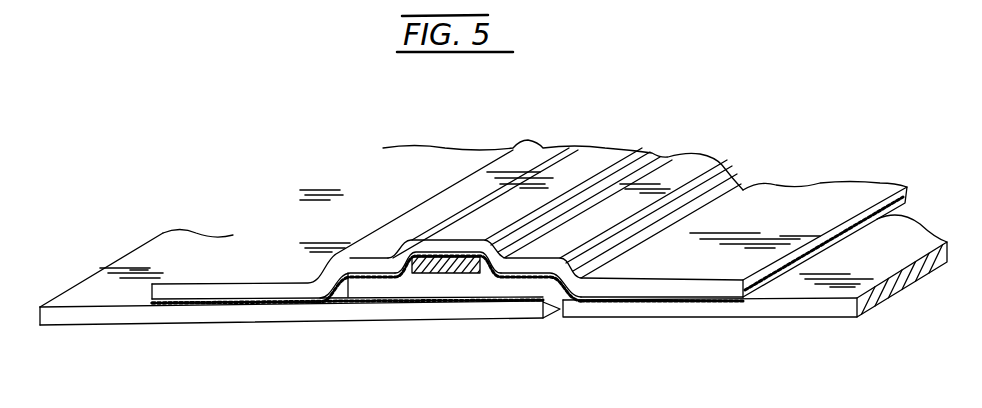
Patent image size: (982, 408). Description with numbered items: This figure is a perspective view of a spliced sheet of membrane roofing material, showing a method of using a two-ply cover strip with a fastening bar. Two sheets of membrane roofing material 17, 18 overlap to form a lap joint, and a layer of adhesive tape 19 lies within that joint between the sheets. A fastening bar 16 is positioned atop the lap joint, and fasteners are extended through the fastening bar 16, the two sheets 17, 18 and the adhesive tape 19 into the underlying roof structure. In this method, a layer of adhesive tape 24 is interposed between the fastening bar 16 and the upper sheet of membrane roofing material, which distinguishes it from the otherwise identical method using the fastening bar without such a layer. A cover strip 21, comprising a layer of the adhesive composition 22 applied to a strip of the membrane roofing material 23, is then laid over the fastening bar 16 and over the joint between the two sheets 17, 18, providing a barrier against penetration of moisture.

The fastening bar 16 is at (443, 254).
The sheet of membrane roofing material 17 is at (253, 323).
The sheet of membrane roofing material 18 is at (623, 318).
The adhesive tape 19 is at (428, 299).
The cover strip 21 is at (838, 157).
The adhesive composition 22 is at (900, 215).
The strip of membrane roofing material 23 is at (906, 192).
The adhesive tape 24 is at (463, 276).